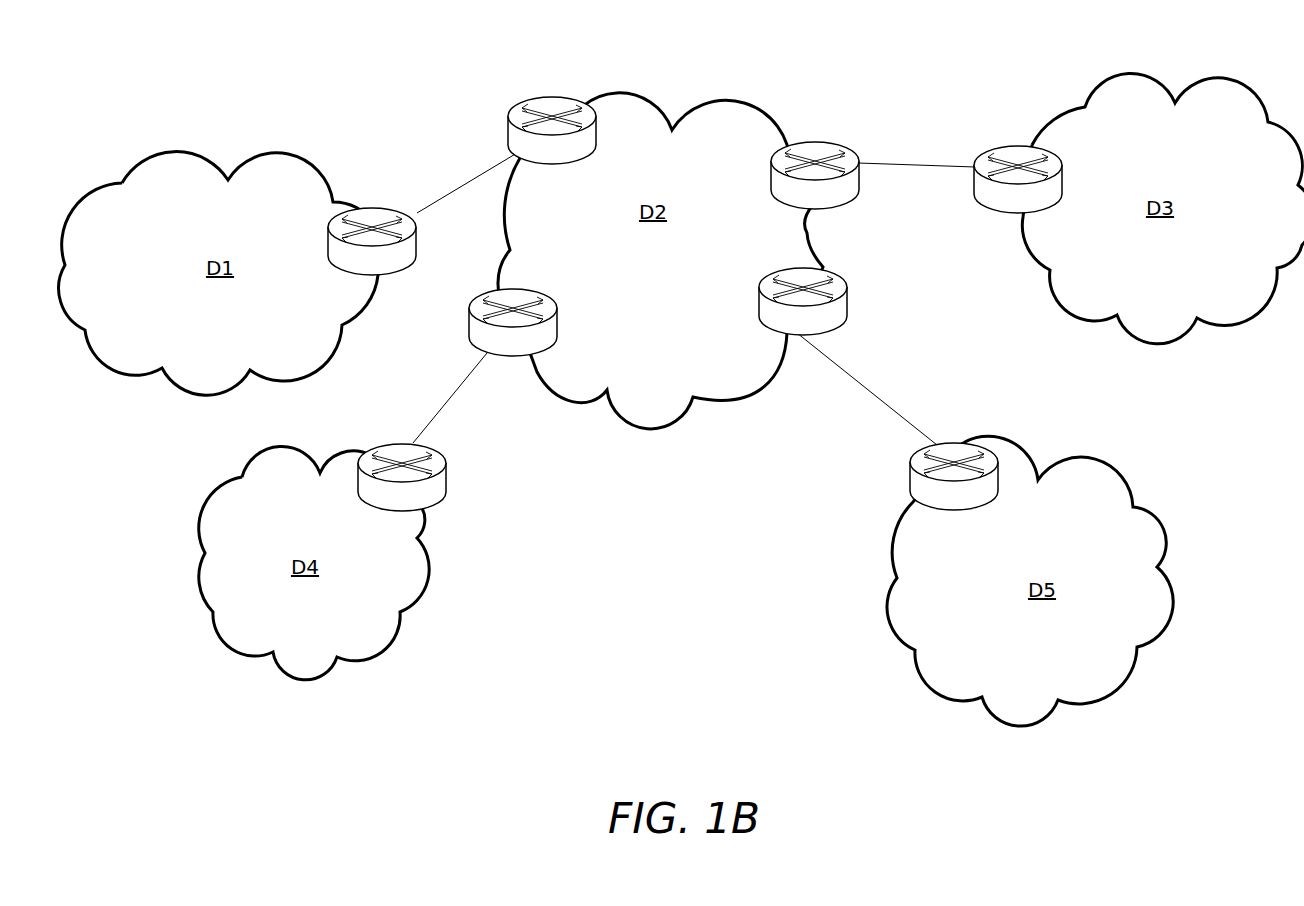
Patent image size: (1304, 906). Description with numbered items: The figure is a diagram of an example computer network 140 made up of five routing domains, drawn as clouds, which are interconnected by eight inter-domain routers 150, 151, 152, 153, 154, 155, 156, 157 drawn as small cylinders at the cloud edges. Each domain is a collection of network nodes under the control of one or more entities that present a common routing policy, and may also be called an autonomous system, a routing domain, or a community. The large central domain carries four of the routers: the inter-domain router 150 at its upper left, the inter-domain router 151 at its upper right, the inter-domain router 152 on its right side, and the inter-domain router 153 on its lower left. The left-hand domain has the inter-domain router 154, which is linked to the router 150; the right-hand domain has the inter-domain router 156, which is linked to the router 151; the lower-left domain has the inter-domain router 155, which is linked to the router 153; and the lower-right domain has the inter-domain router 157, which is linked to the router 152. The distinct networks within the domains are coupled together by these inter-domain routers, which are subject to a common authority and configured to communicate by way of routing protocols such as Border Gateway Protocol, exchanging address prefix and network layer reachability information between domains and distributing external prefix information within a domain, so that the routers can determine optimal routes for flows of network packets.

The computer network 140 is at (887, 68).
The inter-domain router 150 is at (552, 130).
The inter-domain router 151 is at (815, 175).
The inter-domain router 152 is at (803, 301).
The inter-domain router 153 is at (513, 322).
The inter-domain router 154 is at (372, 241).
The inter-domain router 155 is at (402, 477).
The inter-domain router 156 is at (1018, 179).
The inter-domain router 157 is at (954, 476).